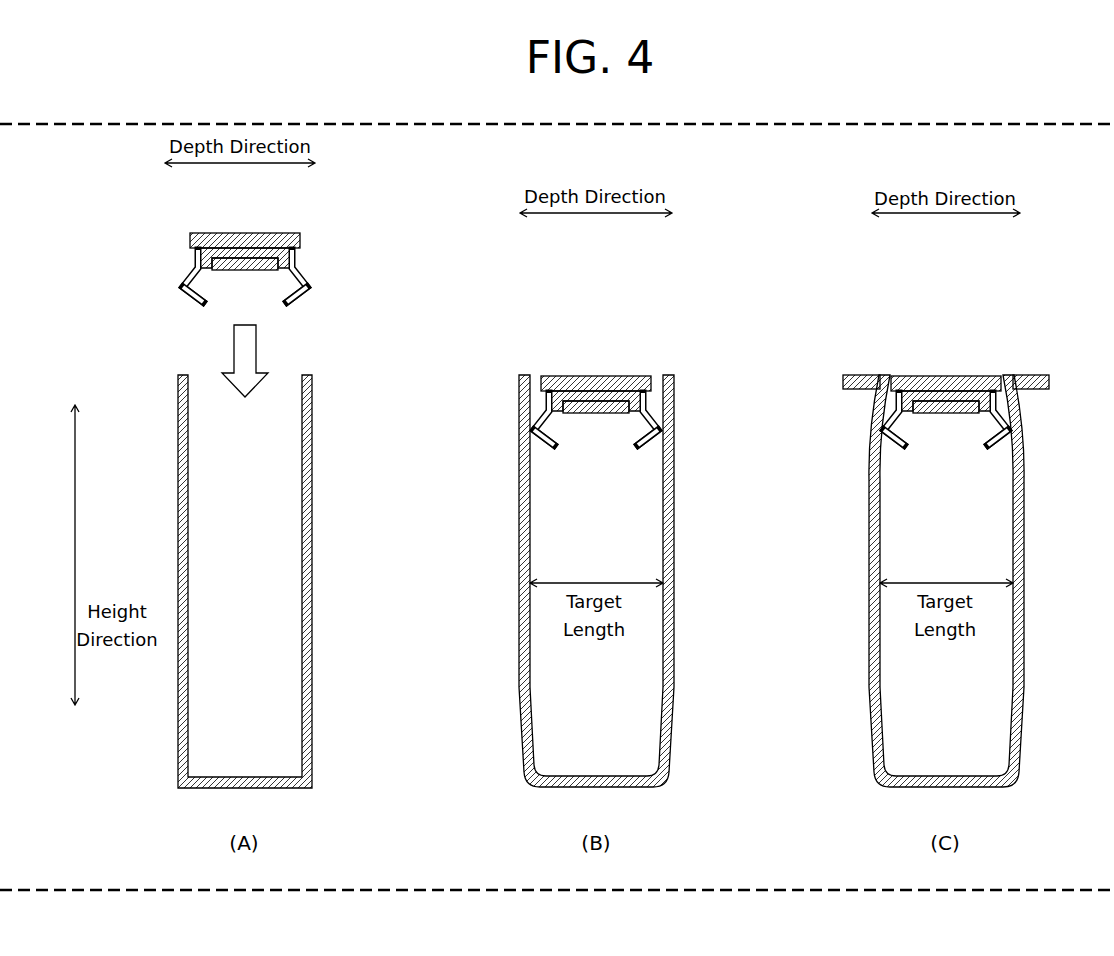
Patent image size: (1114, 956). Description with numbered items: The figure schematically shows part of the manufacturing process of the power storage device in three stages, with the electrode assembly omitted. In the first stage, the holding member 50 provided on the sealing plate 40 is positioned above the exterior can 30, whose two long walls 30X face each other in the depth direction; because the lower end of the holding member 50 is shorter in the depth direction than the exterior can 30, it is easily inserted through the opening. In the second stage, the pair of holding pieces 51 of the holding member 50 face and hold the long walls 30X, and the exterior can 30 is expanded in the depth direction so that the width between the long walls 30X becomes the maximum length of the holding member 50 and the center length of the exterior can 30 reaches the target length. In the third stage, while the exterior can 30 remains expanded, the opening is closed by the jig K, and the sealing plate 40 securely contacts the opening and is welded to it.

The exterior can 30 is at (331, 656).
The long wall 30X is at (178, 548).
The sealing plate 40 is at (262, 233).
The holding member 50 is at (323, 305).
The holding piece 51 is at (198, 306).
The jig K is at (860, 375).